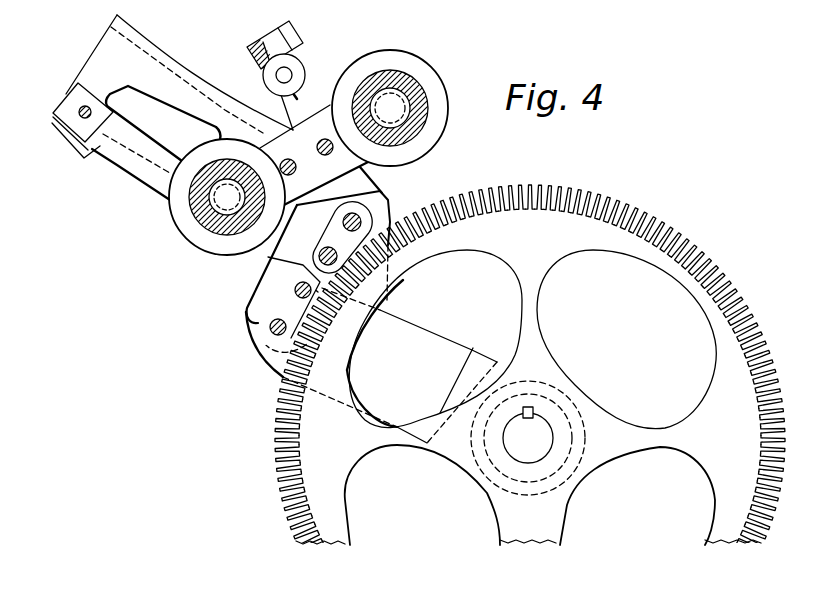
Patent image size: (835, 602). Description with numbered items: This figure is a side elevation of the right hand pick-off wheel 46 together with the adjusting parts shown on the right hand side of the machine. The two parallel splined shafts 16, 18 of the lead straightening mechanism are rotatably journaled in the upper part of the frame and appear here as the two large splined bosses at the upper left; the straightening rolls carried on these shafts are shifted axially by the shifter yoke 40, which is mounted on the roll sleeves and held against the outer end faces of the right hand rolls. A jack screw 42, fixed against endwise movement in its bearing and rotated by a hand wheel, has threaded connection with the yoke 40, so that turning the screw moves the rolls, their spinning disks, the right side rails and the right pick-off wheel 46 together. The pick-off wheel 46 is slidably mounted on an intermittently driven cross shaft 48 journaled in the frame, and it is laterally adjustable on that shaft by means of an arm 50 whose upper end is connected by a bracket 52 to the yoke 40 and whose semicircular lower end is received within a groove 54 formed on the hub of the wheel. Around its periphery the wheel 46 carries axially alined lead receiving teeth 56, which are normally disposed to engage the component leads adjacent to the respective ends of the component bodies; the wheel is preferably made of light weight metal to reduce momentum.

The splined shaft 16 is at (222, 222).
The splined shaft 18 is at (397, 98).
The shifter yoke 40 is at (283, 51).
The jack screw 42 is at (288, 54).
The pick-off wheel 46 is at (583, 222).
The cross shaft 48 is at (552, 428).
The arm 50 is at (437, 337).
The bracket 52 is at (383, 194).
The groove 54 is at (557, 477).
The lead receiving teeth 56 is at (745, 298).